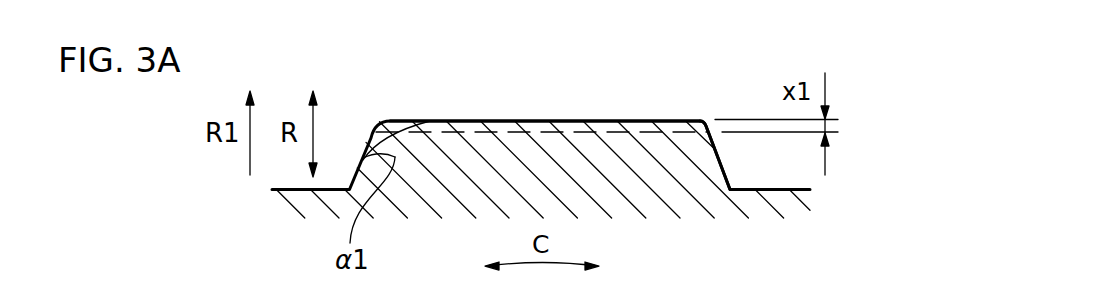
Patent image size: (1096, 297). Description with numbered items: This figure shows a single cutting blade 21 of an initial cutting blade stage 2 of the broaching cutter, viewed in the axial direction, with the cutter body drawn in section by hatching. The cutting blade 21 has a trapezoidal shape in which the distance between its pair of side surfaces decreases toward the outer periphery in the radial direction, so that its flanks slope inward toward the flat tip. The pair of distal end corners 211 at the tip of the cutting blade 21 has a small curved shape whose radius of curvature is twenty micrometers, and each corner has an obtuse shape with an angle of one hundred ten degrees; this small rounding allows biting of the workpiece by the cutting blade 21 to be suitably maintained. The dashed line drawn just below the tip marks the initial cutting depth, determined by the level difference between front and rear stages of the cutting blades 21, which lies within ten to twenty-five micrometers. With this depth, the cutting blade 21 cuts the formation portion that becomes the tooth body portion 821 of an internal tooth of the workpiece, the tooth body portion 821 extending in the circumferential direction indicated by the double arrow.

The initial cutting blade stage 2 is at (465, 112).
The cutting blade 21 is at (532, 160).
The tooth body portion 821 is at (602, 152).
The distal end corner 211 is at (705, 121).